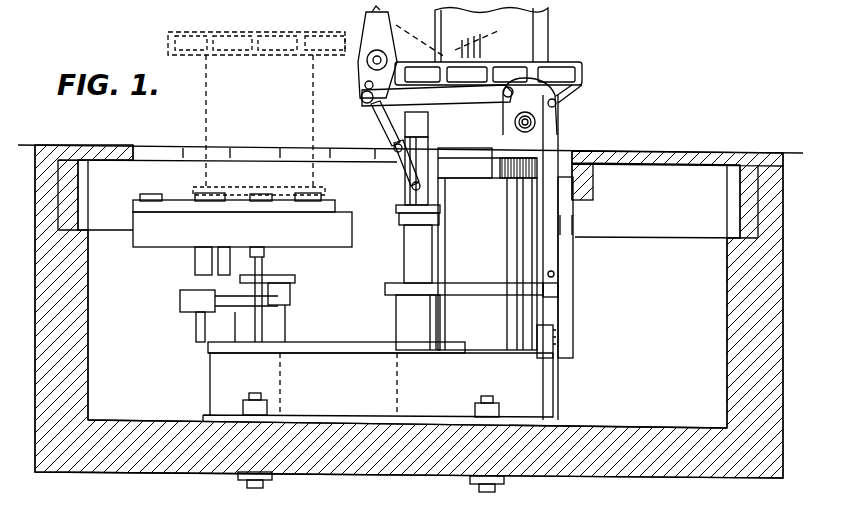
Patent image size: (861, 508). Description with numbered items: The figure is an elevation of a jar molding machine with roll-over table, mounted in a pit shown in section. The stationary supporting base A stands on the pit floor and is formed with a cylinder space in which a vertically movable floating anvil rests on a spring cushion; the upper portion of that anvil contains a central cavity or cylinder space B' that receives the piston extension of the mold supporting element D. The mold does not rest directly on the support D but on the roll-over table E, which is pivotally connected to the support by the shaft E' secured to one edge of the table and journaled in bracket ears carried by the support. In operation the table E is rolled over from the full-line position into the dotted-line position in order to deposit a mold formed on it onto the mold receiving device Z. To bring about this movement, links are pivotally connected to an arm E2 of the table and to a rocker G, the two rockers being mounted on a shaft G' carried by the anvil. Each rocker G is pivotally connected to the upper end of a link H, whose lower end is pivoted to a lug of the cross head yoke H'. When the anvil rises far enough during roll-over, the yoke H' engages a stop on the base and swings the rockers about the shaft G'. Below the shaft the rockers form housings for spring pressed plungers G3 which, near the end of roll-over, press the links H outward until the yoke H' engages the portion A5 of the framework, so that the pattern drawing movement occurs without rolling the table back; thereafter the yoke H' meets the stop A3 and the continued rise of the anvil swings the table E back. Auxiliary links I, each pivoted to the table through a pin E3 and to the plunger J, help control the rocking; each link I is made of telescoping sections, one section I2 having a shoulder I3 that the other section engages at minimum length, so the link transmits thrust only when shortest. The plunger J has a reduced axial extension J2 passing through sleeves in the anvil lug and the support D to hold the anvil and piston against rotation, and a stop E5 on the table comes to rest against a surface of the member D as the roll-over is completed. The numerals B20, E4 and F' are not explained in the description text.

The stationary supporting base A is at (378, 417).
The stop A3 is at (573, 230).
The portion of the supporting framework A5 is at (560, 320).
The cylinder space of the anvil B' is at (487, 249).
The connecting rod B20 is at (390, 135).
The mold supporting element D is at (570, 92).
The roll-over table E is at (503, 73).
The shaft E' is at (367, 55).
The arm of the table E2 is at (365, 85).
The pin E3 is at (362, 100).
The upper block E4 is at (398, 28).
The stop E5 is at (372, 10).
The valve casing F' is at (428, 158).
The rocker G is at (530, 106).
The shaft G' is at (506, 124).
The spring pressed plunger G3 is at (575, 170).
The link H is at (574, 257).
The cross head yoke H' is at (496, 285).
The link I is at (392, 128).
The telescoping section of link I I2 is at (398, 152).
The shoulder I3 is at (412, 186).
The plunger J is at (432, 200).
The axial extension of the plunger J2 is at (398, 214).
The mold receiving device Z is at (242, 217).